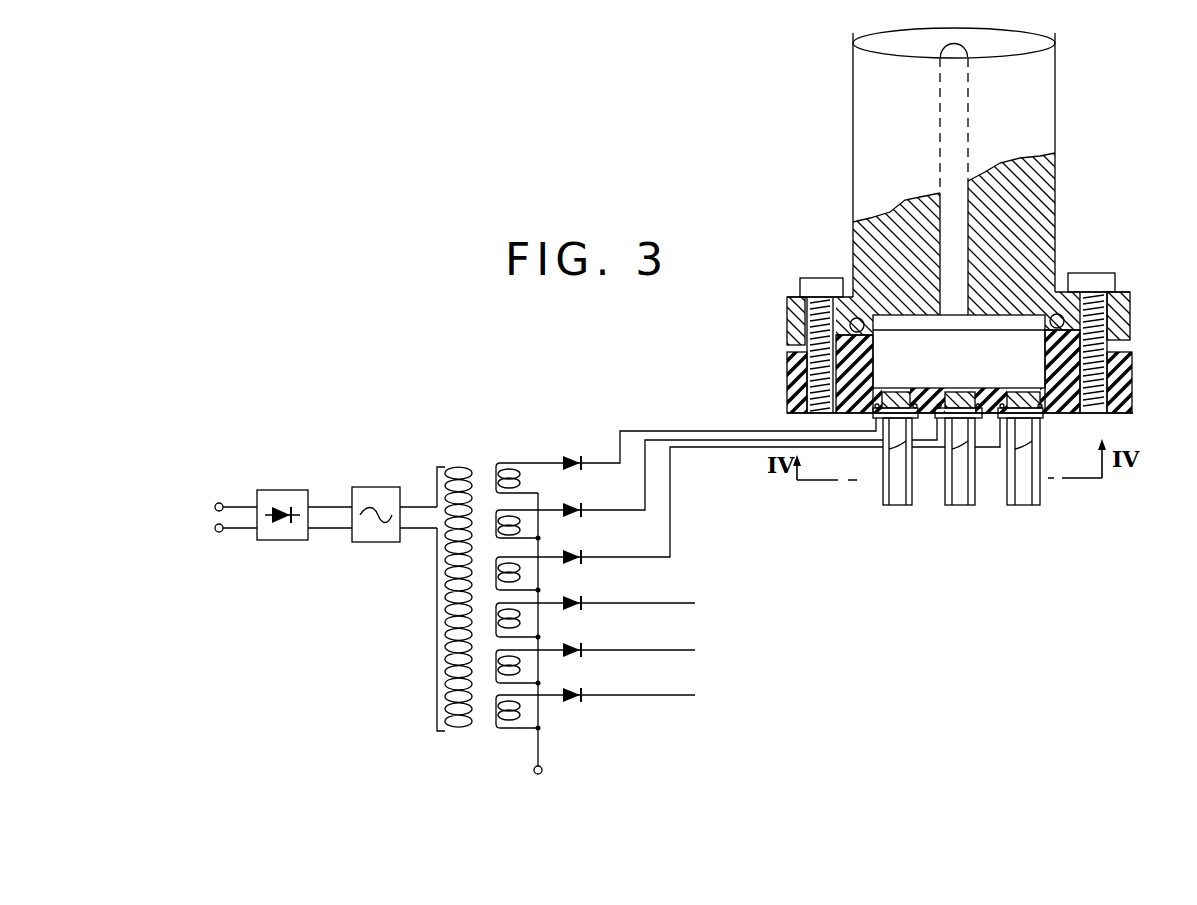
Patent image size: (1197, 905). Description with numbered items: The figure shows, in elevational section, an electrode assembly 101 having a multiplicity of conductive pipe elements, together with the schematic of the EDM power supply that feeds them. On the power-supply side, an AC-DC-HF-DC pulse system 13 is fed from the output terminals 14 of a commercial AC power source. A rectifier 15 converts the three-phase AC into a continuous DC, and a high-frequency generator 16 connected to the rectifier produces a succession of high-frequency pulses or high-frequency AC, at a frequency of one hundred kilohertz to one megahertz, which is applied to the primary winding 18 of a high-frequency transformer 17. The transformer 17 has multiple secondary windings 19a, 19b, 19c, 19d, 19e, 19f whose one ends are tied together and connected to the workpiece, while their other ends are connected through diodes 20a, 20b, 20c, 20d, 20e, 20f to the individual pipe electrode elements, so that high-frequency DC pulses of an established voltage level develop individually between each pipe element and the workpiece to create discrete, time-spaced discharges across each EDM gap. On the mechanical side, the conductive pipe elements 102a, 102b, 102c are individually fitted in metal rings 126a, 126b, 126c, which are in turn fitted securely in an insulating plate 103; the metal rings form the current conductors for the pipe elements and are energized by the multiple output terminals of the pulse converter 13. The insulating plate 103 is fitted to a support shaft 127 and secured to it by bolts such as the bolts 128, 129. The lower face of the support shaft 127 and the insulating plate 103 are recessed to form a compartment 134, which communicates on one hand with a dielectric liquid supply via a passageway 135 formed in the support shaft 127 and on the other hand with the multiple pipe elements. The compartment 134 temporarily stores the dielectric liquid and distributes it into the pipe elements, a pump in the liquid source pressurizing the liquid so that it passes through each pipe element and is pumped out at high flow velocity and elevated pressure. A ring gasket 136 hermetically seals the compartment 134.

The AC-DC-HF-DC pulse system 13 is at (422, 662).
The output terminals of commercial AC power source 14 is at (206, 519).
The rectifier 15 is at (282, 541).
The high-frequency generator 16 is at (365, 542).
The high-frequency transformer 17 is at (480, 483).
The primary winding 18 is at (444, 474).
The secondary winding 19a is at (522, 481).
The secondary winding 19b is at (523, 528).
The secondary winding 19c is at (523, 576).
The secondary winding 19d is at (523, 621).
The secondary winding 19e is at (523, 669).
The secondary winding 19f is at (535, 712).
The diode 20a is at (576, 470).
The diode 20b is at (578, 516).
The diode 20c is at (590, 563).
The diode 20d is at (588, 609).
The diode 20e is at (588, 656).
The diode 20f is at (590, 701).
The electrode assembly 101 is at (1053, 497).
The conductive pipe element 102a is at (895, 491).
The conductive pipe element 102b is at (957, 498).
The conductive pipe element 102c is at (1027, 498).
The insulating plate 103 is at (1122, 383).
The metal ring 126a is at (788, 403).
The metal ring 126b is at (952, 413).
The metal ring 126c is at (1013, 410).
The support shaft 127 is at (1044, 92).
The bolt 128 is at (1094, 273).
The bolt 129 is at (812, 278).
The compartment 134 is at (952, 337).
The passageway 135 is at (958, 200).
The ring gasket 136 is at (1051, 315).